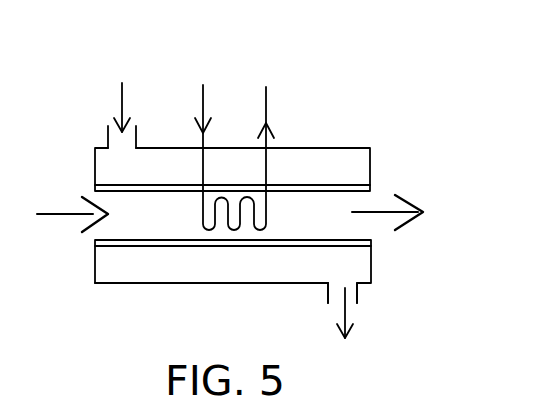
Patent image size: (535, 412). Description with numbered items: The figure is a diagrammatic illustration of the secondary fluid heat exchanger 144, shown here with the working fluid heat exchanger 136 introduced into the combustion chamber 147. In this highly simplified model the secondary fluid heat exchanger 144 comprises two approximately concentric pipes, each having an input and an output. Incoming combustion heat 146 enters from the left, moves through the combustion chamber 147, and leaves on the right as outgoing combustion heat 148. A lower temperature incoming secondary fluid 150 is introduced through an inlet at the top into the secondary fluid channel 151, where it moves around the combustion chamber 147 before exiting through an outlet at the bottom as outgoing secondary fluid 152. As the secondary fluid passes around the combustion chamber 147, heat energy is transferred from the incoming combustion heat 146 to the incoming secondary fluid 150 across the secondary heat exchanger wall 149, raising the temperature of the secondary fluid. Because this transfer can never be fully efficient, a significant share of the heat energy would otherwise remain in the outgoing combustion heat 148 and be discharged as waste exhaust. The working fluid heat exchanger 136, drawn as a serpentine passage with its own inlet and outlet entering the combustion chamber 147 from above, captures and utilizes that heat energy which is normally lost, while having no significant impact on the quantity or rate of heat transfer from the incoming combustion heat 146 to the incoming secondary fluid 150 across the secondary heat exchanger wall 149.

The working fluid heat exchanger 136 is at (267, 158).
The secondary fluid heat exchanger 144 is at (232, 299).
The incoming combustion heat 146 is at (69, 215).
The combustion chamber 147 is at (163, 233).
The outgoing combustion heat 148 is at (380, 212).
The secondary heat exchanger wall 149 is at (310, 185).
The incoming secondary fluid 150 is at (121, 101).
The secondary fluid channel 151 is at (110, 260).
The outgoing secondary fluid 152 is at (343, 309).